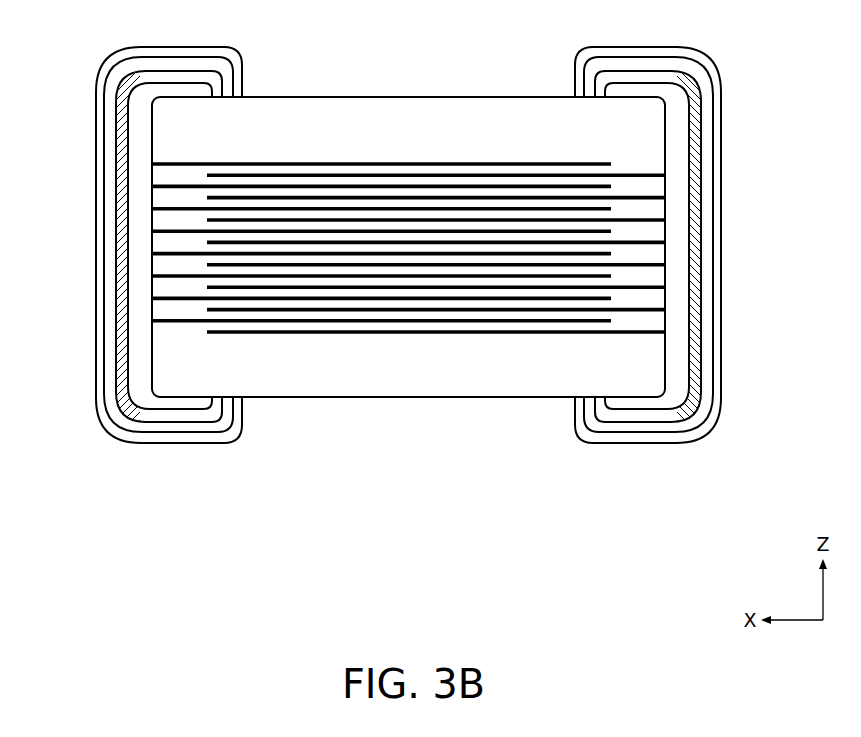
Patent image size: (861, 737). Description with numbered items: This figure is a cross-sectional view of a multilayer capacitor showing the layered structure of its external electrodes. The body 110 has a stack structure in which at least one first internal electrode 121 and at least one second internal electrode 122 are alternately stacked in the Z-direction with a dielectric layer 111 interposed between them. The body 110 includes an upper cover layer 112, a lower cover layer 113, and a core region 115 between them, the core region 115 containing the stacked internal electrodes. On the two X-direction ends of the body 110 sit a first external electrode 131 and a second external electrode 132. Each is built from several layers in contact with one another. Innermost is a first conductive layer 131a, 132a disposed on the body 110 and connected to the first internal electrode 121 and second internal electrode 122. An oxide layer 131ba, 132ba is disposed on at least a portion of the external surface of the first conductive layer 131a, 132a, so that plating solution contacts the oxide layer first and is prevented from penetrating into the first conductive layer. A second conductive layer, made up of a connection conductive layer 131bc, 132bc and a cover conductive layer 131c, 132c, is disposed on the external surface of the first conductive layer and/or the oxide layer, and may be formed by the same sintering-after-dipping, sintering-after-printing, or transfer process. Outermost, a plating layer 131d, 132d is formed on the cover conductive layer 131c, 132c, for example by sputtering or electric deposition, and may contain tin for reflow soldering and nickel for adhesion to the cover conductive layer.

The body 110 is at (505, 90).
The dielectric layer 111 is at (428, 172).
The upper cover layer 112 is at (358, 118).
The lower cover layer 113 is at (477, 382).
The core region 115 is at (406, 184).
The first internal electrode 121 is at (166, 168).
The second internal electrode 122 is at (653, 162).
The first external electrode 131 is at (147, 299).
The first conductive layer 131a is at (261, 450).
The oxide layer 131ba is at (176, 420).
The connection conductive layer 131bc is at (129, 411).
The cover conductive layer 131c is at (113, 387).
The plating layer 131d is at (100, 350).
The second external electrode 132 is at (669, 299).
The first conductive layer 132a is at (561, 450).
The oxide layer 132ba is at (640, 418).
The connection conductive layer 132bc is at (687, 401).
The cover conductive layer 132c is at (703, 383).
The plating layer 132d is at (718, 350).